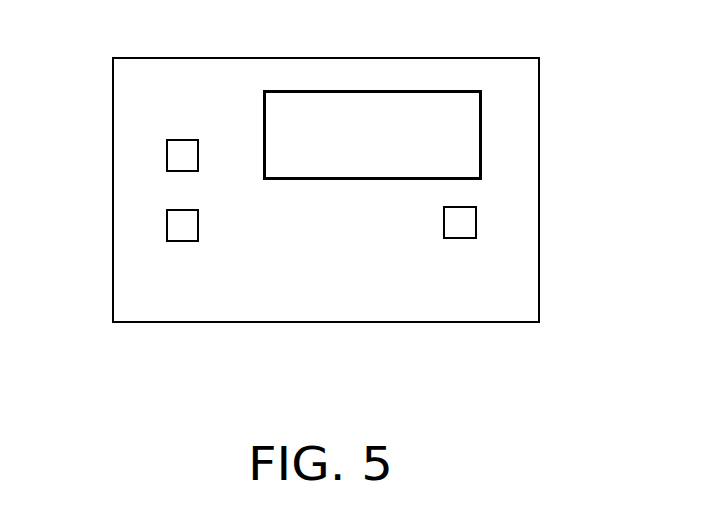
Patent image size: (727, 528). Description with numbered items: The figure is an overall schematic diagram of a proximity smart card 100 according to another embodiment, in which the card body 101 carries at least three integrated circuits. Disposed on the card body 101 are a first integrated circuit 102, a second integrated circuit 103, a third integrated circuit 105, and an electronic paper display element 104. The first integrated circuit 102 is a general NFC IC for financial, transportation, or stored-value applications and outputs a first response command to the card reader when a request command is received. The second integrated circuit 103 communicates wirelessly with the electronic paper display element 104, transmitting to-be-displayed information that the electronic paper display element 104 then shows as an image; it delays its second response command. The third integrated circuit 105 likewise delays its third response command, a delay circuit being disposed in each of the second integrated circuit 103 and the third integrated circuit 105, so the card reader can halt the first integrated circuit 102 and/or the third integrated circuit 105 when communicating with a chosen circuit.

The proximity smart card 100 is at (619, 406).
The card body 101 is at (113, 283).
The first integrated circuit 102 is at (181, 156).
The second integrated circuit 103 is at (465, 224).
The electronic paper display element 104 is at (465, 139).
The third integrated circuit 105 is at (165, 226).